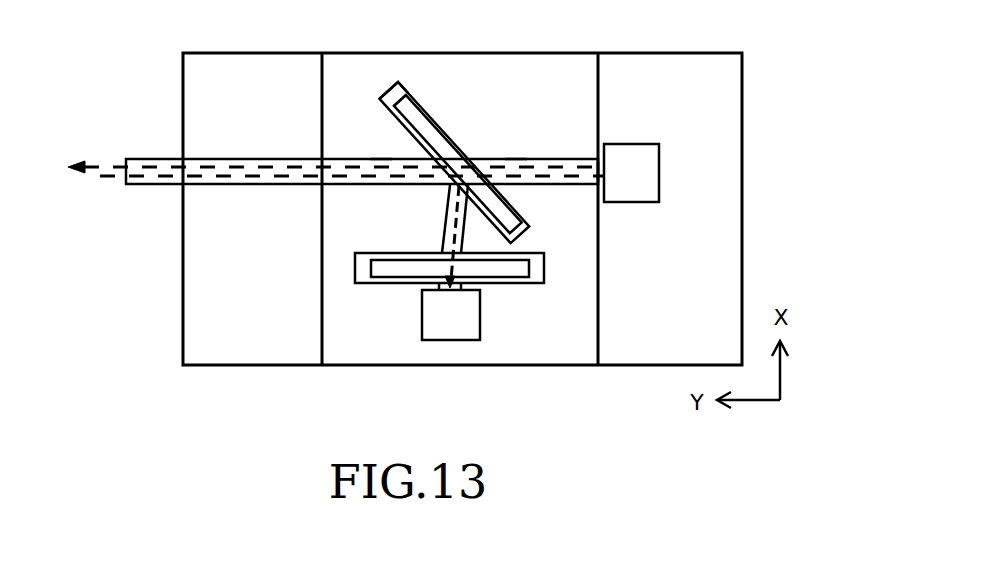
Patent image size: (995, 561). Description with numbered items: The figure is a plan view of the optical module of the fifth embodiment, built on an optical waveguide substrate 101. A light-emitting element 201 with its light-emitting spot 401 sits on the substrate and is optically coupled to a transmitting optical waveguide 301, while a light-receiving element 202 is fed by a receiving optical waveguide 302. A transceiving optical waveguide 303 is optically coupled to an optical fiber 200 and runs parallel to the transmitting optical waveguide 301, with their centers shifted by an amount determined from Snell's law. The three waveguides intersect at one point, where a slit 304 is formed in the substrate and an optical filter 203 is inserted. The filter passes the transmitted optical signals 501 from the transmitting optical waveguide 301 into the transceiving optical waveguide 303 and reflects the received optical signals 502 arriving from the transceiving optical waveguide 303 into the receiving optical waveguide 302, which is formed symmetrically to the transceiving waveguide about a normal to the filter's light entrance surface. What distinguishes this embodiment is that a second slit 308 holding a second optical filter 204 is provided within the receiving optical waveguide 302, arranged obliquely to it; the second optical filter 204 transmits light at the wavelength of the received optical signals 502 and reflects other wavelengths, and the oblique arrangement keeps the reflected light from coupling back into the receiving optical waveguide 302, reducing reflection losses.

The optical waveguide substrate 101 is at (722, 52).
The optical fiber 200 is at (231, 159).
The light-emitting element 201 is at (632, 144).
The light-receiving element 202 is at (440, 340).
The optical filter 203 is at (402, 89).
The second optical filter 204 is at (503, 277).
The transmitting optical waveguide 301 is at (515, 158).
The receiving optical waveguide 302 is at (448, 203).
The transceiving optical waveguide 303 is at (379, 158).
The slit 304 is at (396, 87).
The second slit 308 is at (542, 285).
The light-emitting spot 401 is at (598, 182).
The transmitted optical signals 501 is at (336, 155).
The received optical signals 502 is at (337, 193).